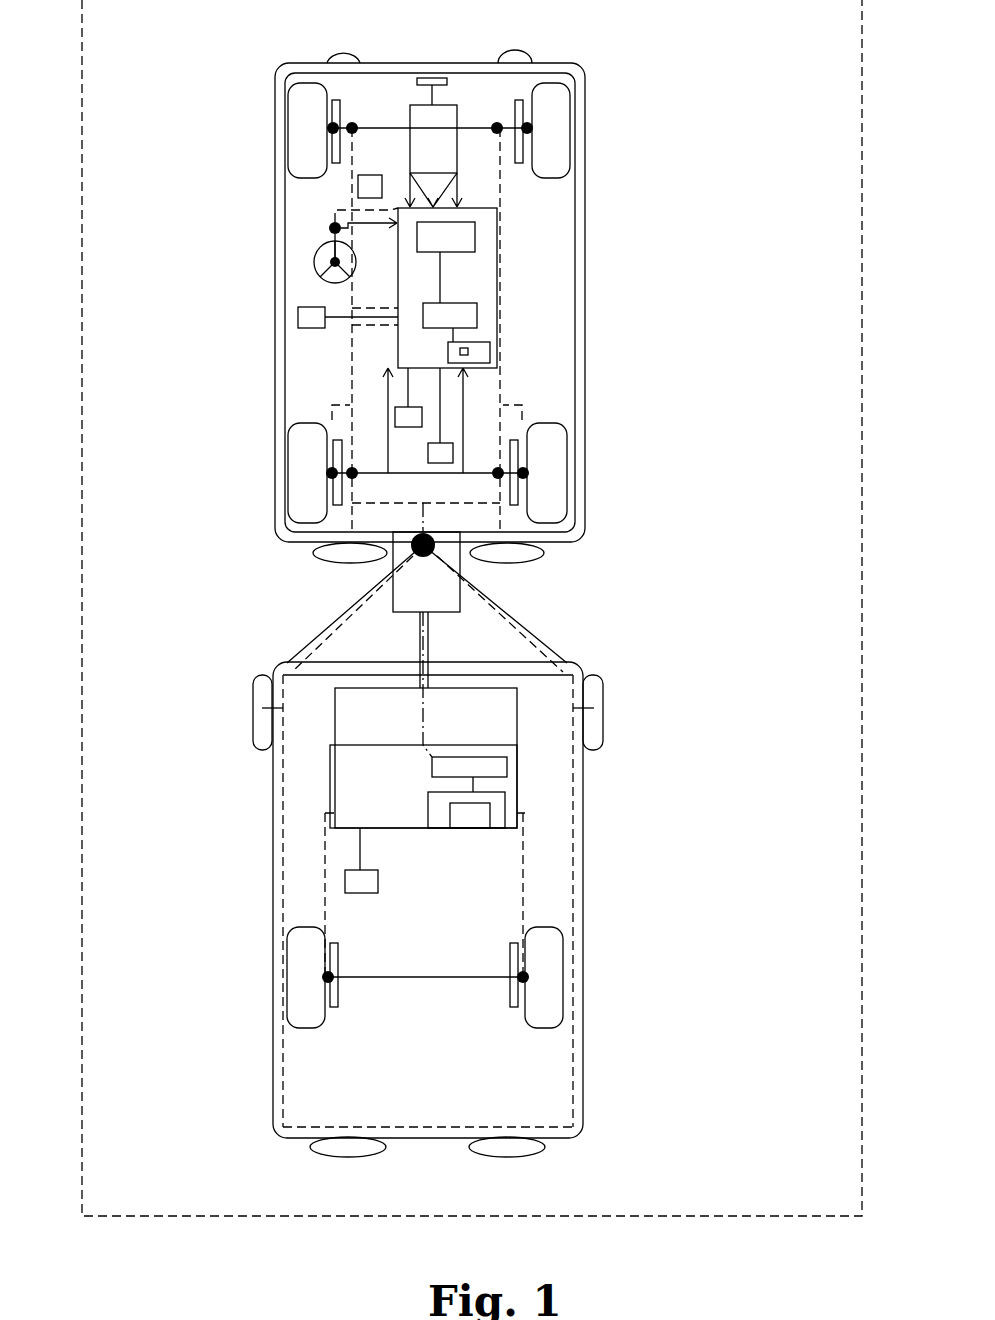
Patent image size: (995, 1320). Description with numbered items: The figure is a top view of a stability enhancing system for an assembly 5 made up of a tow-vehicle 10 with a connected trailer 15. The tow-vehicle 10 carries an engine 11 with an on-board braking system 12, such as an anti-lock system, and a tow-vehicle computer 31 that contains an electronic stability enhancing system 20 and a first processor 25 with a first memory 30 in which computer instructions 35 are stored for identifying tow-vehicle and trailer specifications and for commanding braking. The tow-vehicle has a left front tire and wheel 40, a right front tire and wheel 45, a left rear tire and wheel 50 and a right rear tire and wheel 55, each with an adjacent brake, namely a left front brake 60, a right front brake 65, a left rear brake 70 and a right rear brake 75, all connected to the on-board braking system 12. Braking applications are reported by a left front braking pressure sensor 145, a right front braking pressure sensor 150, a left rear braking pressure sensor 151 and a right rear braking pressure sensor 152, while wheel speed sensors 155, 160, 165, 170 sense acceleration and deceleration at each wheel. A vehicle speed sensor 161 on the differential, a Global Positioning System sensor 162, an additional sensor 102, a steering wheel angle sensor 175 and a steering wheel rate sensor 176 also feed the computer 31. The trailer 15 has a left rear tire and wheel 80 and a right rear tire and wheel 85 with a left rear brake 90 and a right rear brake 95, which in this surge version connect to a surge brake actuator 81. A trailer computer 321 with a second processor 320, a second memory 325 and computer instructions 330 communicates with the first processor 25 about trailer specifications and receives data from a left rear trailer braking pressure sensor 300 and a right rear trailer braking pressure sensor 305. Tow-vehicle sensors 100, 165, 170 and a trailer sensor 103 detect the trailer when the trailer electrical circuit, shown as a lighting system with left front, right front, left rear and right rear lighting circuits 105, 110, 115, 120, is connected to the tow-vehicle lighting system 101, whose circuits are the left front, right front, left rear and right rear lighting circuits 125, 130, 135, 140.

The assembly 5 is at (56, 210).
The tow-vehicle 10 is at (675, 187).
The engine 11 is at (430, 78).
The on-board braking system 12 is at (358, 192).
The trailer 15 is at (775, 865).
The electronic stability enhancing system 20 is at (477, 233).
The first processor 25 is at (477, 306).
The first memory 30 is at (490, 349).
The tow-vehicle computer 31 is at (497, 216).
The computer instructions 35 is at (470, 350).
The left front tire and wheel 40 is at (308, 150).
The right front tire and wheel 45 is at (560, 143).
The left rear tire and wheel 50 is at (320, 522).
The right rear tire and wheel 55 is at (550, 448).
The left front brake 60 is at (335, 124).
The right front brake 65 is at (520, 108).
The left rear brake 70 is at (333, 497).
The right rear brake 75 is at (518, 482).
The left rear tire and wheel 80 is at (300, 953).
The surge brake actuator 81 is at (393, 595).
The right rear tire and wheel 85 is at (555, 948).
The left rear brake 90 is at (330, 988).
The right rear brake 95 is at (520, 995).
The tow-vehicle sensor 100 is at (437, 551).
The lighting system of the tow-vehicle 101 is at (503, 301).
The additional sensor on the tow-vehicle 102 is at (395, 408).
The trailer sensor 103 is at (347, 882).
The left front lighting circuit 105 is at (260, 693).
The right front lighting circuit 110 is at (598, 700).
The left rear lighting circuit 115 is at (330, 1148).
The right rear lighting circuit 120 is at (533, 1148).
The left front lighting circuit 125 is at (333, 58).
The right front lighting circuit 130 is at (527, 57).
The left rear lighting circuit 135 is at (325, 556).
The right rear lighting circuit 140 is at (545, 525).
The left front tow-vehicle braking pressure sensor 145 is at (332, 131).
The right front tow-vehicle braking pressure sensor 150 is at (527, 126).
The left rear tow-vehicle braking pressure sensor 151 is at (330, 474).
The right rear tow-vehicle braking pressure sensor 152 is at (520, 457).
The left front tow-vehicle wheel speed sensor 155 is at (353, 128).
The right front tow-vehicle wheel speed sensor 160 is at (497, 128).
The vehicle speed sensor 161 is at (428, 458).
The Global Positioning System sensor 162 is at (297, 315).
The left rear tow-vehicle wheel speed sensor 165 is at (330, 470).
The right rear tow-vehicle wheel speed sensor 170 is at (500, 470).
The steering wheel angle sensor 175 is at (329, 227).
The steering wheel rate sensor 176 is at (313, 262).
The left rear trailer braking pressure sensor 300 is at (327, 977).
The right rear trailer braking pressure sensor 305 is at (523, 980).
The second processor 320 is at (508, 768).
The trailer computer 321 is at (335, 780).
The second memory 325 is at (505, 798).
The computer instructions 330 is at (478, 818).